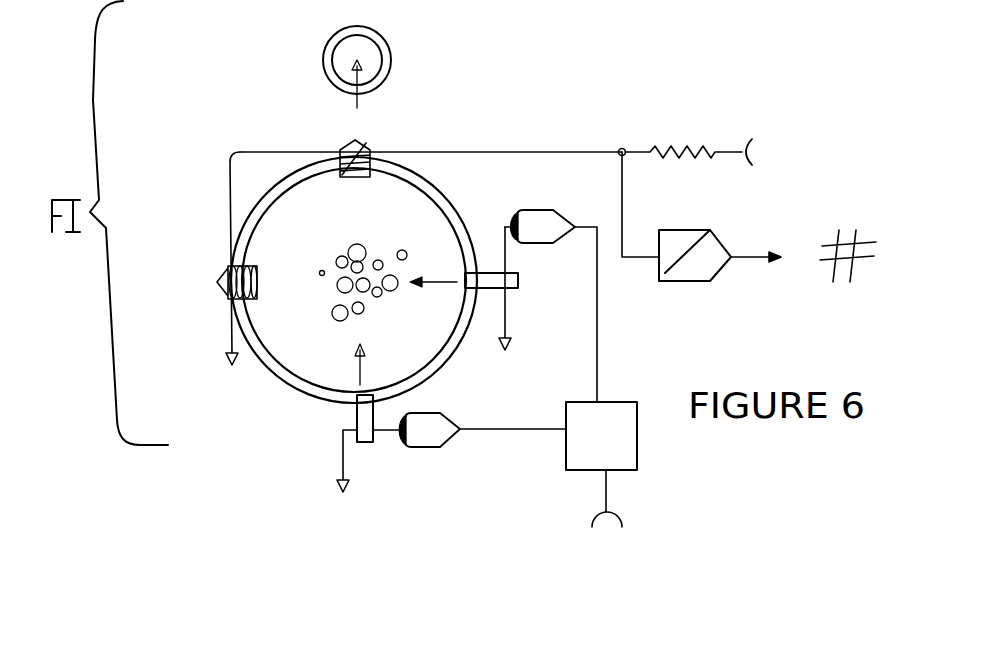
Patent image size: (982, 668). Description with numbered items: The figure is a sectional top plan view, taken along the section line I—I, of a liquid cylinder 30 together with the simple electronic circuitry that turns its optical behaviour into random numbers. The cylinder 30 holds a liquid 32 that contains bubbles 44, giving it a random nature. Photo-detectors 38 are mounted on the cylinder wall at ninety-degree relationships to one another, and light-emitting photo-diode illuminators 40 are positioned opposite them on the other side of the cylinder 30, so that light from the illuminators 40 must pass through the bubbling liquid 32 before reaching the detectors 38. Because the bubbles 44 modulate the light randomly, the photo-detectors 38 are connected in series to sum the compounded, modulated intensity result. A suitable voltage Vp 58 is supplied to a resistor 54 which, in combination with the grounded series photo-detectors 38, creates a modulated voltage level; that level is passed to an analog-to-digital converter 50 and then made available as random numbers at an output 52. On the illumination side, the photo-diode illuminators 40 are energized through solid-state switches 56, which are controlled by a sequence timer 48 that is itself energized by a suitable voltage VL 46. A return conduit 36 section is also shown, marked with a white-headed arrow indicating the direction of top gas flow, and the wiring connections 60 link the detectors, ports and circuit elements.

The liquid cylinder 30 is at (292, 383).
The liquid 32 is at (275, 247).
The return conduit 36 is at (383, 53).
The photo-detectors 38 is at (360, 147).
The photo-diode illuminators 40 is at (365, 445).
The bubbles 44 is at (325, 270).
The voltage (VL) 46 is at (438, 432).
The sequence timer 48 is at (583, 455).
The analog-to-digital (A/D) converter 50 is at (705, 233).
The output 52 is at (775, 265).
The resistor 54 is at (677, 150).
The solid-state switches 56 is at (545, 215).
The voltage (Vp) 58 is at (748, 148).
The wire connection 60 is at (232, 365).